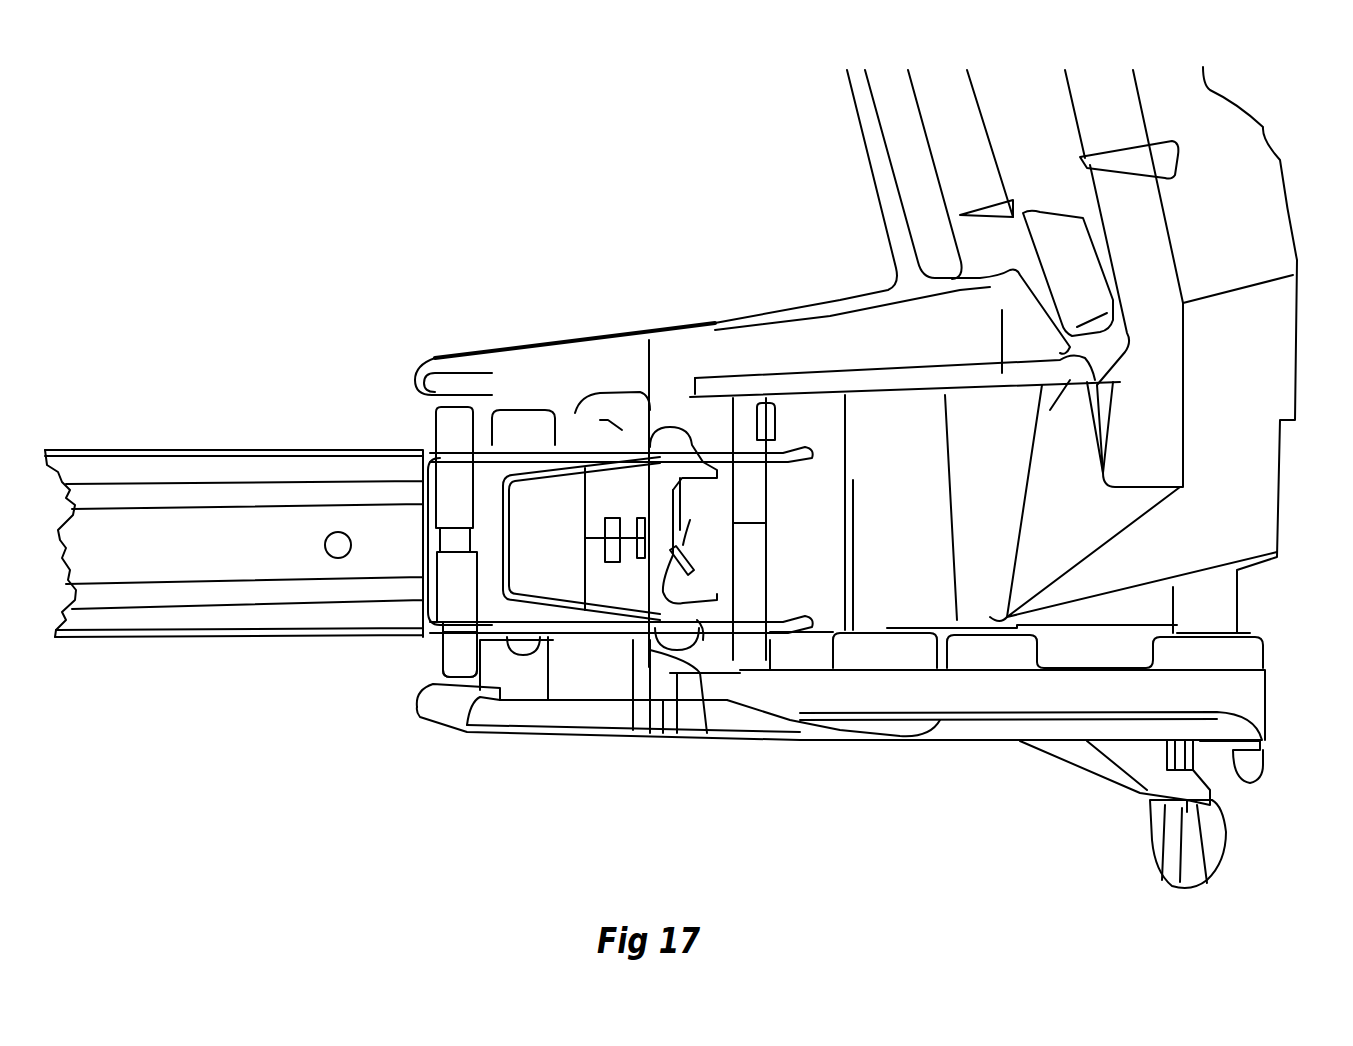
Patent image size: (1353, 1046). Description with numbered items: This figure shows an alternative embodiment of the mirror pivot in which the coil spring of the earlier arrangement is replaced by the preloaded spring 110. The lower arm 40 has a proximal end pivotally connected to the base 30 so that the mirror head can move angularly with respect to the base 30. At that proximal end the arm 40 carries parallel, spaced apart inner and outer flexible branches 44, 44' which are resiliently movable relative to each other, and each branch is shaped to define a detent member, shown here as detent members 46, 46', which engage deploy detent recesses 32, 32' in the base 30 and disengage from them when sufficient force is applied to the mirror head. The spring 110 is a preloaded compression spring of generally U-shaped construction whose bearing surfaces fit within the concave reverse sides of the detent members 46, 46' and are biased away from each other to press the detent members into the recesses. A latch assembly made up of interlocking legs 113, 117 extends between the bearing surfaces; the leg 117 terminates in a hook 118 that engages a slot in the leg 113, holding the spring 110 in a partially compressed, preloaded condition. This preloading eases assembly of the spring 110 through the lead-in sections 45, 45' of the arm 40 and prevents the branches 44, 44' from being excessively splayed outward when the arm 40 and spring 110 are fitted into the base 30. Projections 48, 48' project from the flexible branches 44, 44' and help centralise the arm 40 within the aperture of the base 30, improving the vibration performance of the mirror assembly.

The base 30 is at (1240, 213).
The lower arm 40 is at (195, 450).
The projection 48 is at (466, 479).
The projection 48' is at (392, 664).
The inner flexible branch 44 is at (581, 450).
The outer flexible branch 44' is at (556, 718).
The leg 113 is at (620, 468).
The deploy detent recess 32 is at (672, 442).
The deploy detent recess 32' is at (709, 712).
The detent member 46 is at (690, 385).
The detent member 46' is at (673, 716).
The spring 110 is at (498, 512).
The lead-in section 45 is at (664, 483).
The lead-in section 45' is at (666, 590).
The hook 118 is at (687, 528).
The leg 117 is at (633, 730).